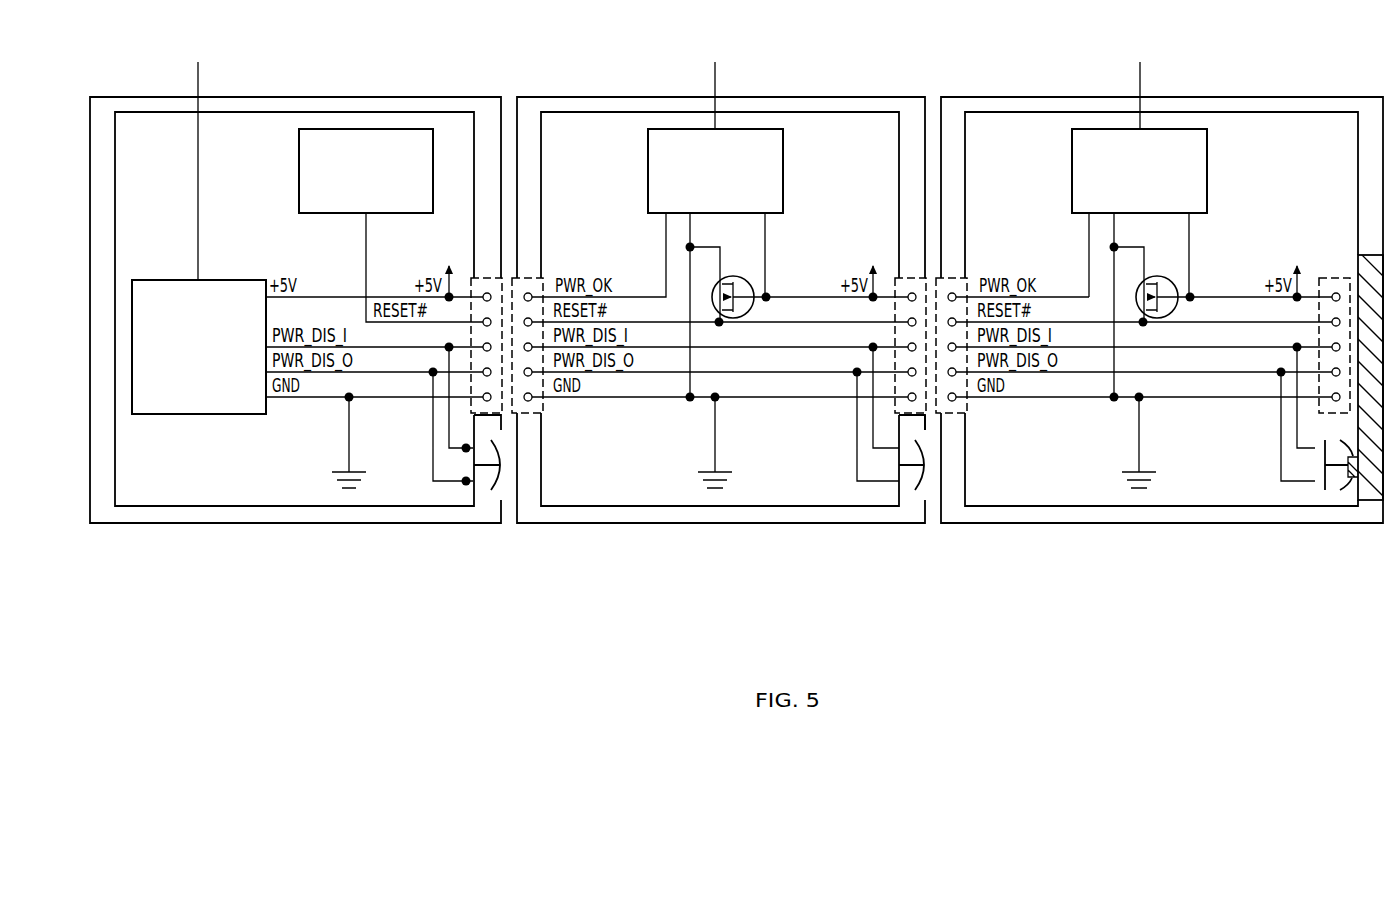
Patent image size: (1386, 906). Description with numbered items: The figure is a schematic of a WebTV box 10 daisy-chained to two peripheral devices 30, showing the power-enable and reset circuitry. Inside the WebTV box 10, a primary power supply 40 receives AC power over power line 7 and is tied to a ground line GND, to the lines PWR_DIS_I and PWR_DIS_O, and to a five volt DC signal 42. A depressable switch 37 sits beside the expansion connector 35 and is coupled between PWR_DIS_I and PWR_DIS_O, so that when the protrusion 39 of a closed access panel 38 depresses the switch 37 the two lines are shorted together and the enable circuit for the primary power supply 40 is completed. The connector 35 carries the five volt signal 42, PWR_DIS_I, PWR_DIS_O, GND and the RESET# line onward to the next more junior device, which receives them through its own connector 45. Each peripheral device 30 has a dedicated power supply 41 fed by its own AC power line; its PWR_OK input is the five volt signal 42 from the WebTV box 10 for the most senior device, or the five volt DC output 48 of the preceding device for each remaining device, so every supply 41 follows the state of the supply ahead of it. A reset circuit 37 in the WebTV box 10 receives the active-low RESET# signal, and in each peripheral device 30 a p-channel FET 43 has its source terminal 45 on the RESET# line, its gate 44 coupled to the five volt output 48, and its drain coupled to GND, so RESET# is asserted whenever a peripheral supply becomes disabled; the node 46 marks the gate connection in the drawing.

The power line 7 is at (202, 85).
The WebTV box 10 is at (337, 523).
The peripheral device 30 is at (791, 524).
The connector 35 is at (466, 276).
The switch 37 is at (425, 207).
The access panel 38 is at (1364, 254).
The protrusion 39 is at (1352, 452).
The primary power supply 40 is at (257, 409).
The power supply 41 is at (778, 206).
The 5 volt DC signal 42 is at (339, 297).
The field effect transistor 43 is at (721, 277).
The gate 44 is at (776, 300).
The connector 45 is at (547, 278).
The gate control node 46 is at (697, 245).
The 5 VDC output 48 is at (767, 258).